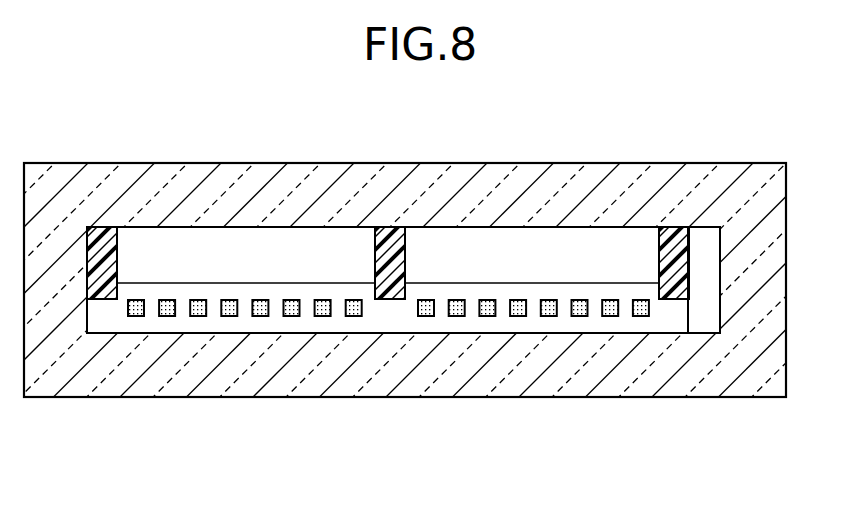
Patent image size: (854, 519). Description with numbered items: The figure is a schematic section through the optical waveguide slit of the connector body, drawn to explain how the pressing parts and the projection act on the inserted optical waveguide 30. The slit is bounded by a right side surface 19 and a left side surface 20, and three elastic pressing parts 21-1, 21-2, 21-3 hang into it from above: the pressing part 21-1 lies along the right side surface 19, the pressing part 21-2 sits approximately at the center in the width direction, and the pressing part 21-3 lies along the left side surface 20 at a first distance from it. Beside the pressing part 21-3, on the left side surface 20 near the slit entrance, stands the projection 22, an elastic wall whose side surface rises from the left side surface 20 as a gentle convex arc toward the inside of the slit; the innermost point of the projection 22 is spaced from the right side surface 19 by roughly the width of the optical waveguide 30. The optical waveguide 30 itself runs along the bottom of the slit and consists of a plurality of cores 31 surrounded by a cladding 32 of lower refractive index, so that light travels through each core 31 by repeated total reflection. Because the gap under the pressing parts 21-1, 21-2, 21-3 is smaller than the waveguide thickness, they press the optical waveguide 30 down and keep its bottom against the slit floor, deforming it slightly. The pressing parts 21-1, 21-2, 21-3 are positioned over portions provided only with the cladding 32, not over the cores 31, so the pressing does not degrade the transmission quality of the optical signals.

The right side surface 19 is at (87, 300).
The left side surface 20 is at (718, 313).
The pressing part 21-1 is at (97, 237).
The pressing part 21-2 is at (390, 237).
The pressing part 21-3 is at (678, 235).
The projection 22 is at (705, 270).
The optical waveguide 30 is at (388, 385).
The core 31 is at (485, 318).
The cladding 32 is at (393, 318).